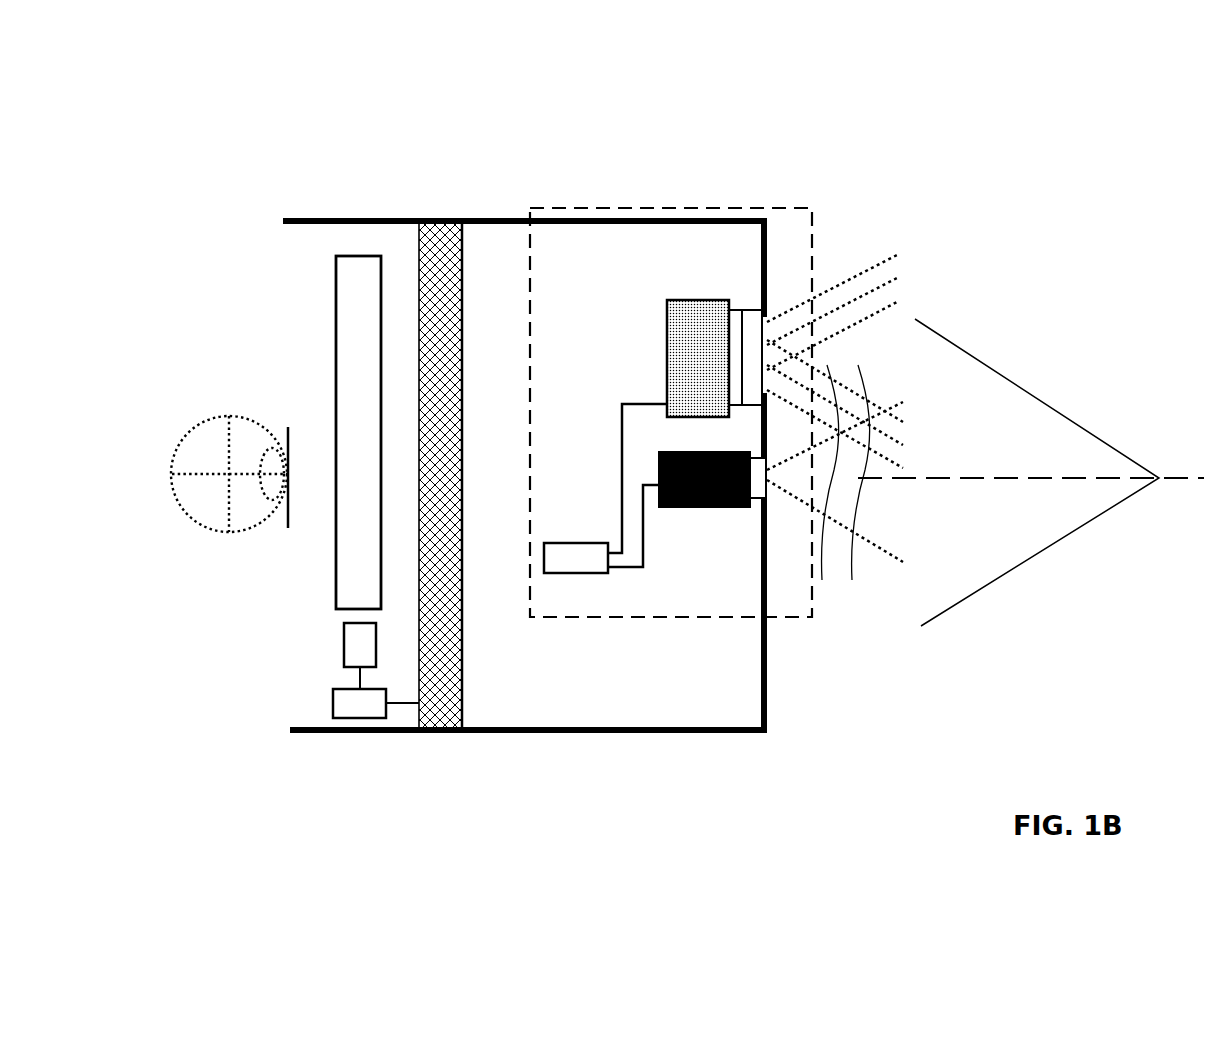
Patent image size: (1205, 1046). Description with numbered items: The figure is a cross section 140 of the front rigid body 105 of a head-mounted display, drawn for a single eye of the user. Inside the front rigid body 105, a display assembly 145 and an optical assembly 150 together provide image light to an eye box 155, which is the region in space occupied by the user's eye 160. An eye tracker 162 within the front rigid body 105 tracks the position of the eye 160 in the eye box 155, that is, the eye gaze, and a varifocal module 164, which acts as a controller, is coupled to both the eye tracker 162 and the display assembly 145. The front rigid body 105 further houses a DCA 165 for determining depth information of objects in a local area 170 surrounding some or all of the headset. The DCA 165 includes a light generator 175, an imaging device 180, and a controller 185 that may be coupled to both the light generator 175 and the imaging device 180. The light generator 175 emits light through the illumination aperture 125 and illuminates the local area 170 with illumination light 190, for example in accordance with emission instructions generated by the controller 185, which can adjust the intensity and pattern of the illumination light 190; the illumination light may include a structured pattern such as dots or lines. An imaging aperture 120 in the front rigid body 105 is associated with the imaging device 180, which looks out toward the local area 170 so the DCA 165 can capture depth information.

The cross section 140 is at (183, 126).
The front rigid body 105 is at (735, 732).
The display assembly 145 is at (418, 263).
The optical assembly 150 is at (341, 290).
The eye box 155 is at (288, 427).
The eye 160 is at (200, 523).
The eye tracker 162 is at (344, 648).
The varifocal module 164 is at (367, 708).
The depth camera assembly (DCA) 165 is at (560, 208).
The light generator 175 is at (700, 302).
The illumination aperture 125 is at (765, 317).
The imaging device 180 is at (707, 507).
The imaging aperture 120 is at (767, 498).
The controller 185 is at (555, 573).
The illumination light 190 is at (860, 292).
The local area 170 is at (1037, 543).